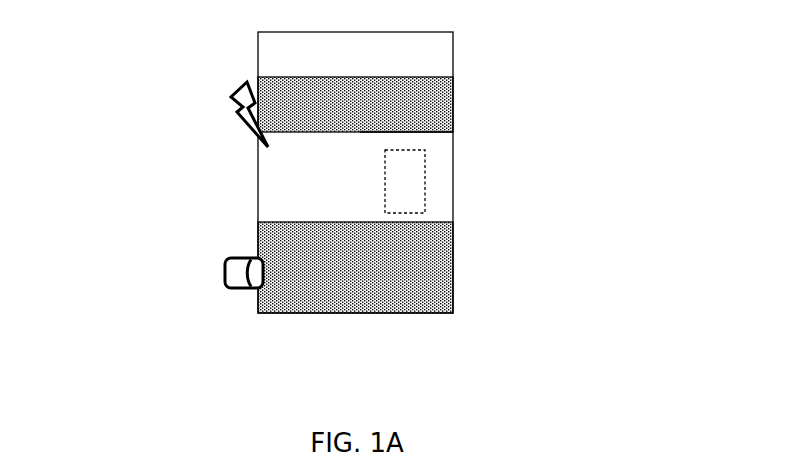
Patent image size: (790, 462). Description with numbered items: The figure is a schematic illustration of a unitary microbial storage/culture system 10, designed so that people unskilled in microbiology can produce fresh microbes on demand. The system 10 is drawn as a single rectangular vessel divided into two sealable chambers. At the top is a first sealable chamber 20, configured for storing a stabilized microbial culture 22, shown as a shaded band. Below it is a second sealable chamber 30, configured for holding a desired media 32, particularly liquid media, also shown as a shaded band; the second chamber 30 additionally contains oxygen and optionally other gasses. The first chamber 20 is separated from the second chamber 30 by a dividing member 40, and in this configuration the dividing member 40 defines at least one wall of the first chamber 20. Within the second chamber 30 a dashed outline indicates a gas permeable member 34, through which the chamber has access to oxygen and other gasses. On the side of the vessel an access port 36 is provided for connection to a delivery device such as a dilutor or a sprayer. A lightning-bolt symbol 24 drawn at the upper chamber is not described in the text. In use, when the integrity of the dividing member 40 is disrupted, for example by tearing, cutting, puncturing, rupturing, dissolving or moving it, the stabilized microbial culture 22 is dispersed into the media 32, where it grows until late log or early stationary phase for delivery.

The unitary microbial storage/culture system 10 is at (167, 68).
The first sealable chamber 20 is at (453, 98).
The stabilized microbial culture 22 is at (413, 117).
The energy input 24 is at (225, 108).
The second sealable chamber 30 is at (453, 233).
The media 32 is at (403, 287).
The gas permeable member 34 is at (427, 183).
The access port 36 is at (222, 277).
The dividing member 40 is at (382, 133).